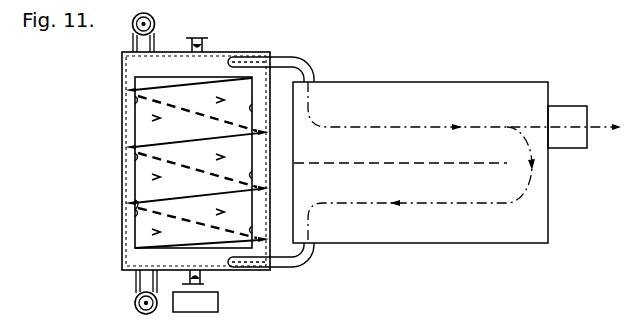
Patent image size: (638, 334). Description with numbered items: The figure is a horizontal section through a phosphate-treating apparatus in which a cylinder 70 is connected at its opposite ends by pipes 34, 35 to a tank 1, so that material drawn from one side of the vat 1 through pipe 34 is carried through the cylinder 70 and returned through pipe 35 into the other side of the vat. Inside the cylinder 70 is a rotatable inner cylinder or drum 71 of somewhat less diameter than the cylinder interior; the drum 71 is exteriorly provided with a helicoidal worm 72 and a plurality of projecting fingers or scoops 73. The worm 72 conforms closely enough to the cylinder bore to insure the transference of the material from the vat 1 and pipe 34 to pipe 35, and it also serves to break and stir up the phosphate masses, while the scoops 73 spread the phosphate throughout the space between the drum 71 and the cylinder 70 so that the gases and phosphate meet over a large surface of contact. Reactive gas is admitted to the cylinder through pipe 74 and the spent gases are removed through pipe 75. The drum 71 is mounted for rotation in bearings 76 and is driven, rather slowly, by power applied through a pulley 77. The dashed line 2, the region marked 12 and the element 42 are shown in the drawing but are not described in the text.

The tank 1 is at (436, 152).
The partition / dividing line 2 is at (376, 163).
The vessel 12 is at (160, 185).
The pipe 34 is at (306, 266).
The pipe 35 is at (298, 58).
The helical baffle 42 is at (228, 155).
The cylinder 70 is at (122, 256).
The inner cylinder or drum 71 is at (135, 232).
The worm 72 is at (134, 203).
The projecting fingers or scoops 73 is at (158, 117).
The pipe 74 is at (137, 295).
The pipe 75 is at (148, 38).
The bearings 76 is at (203, 45).
The pulley 77 is at (213, 303).